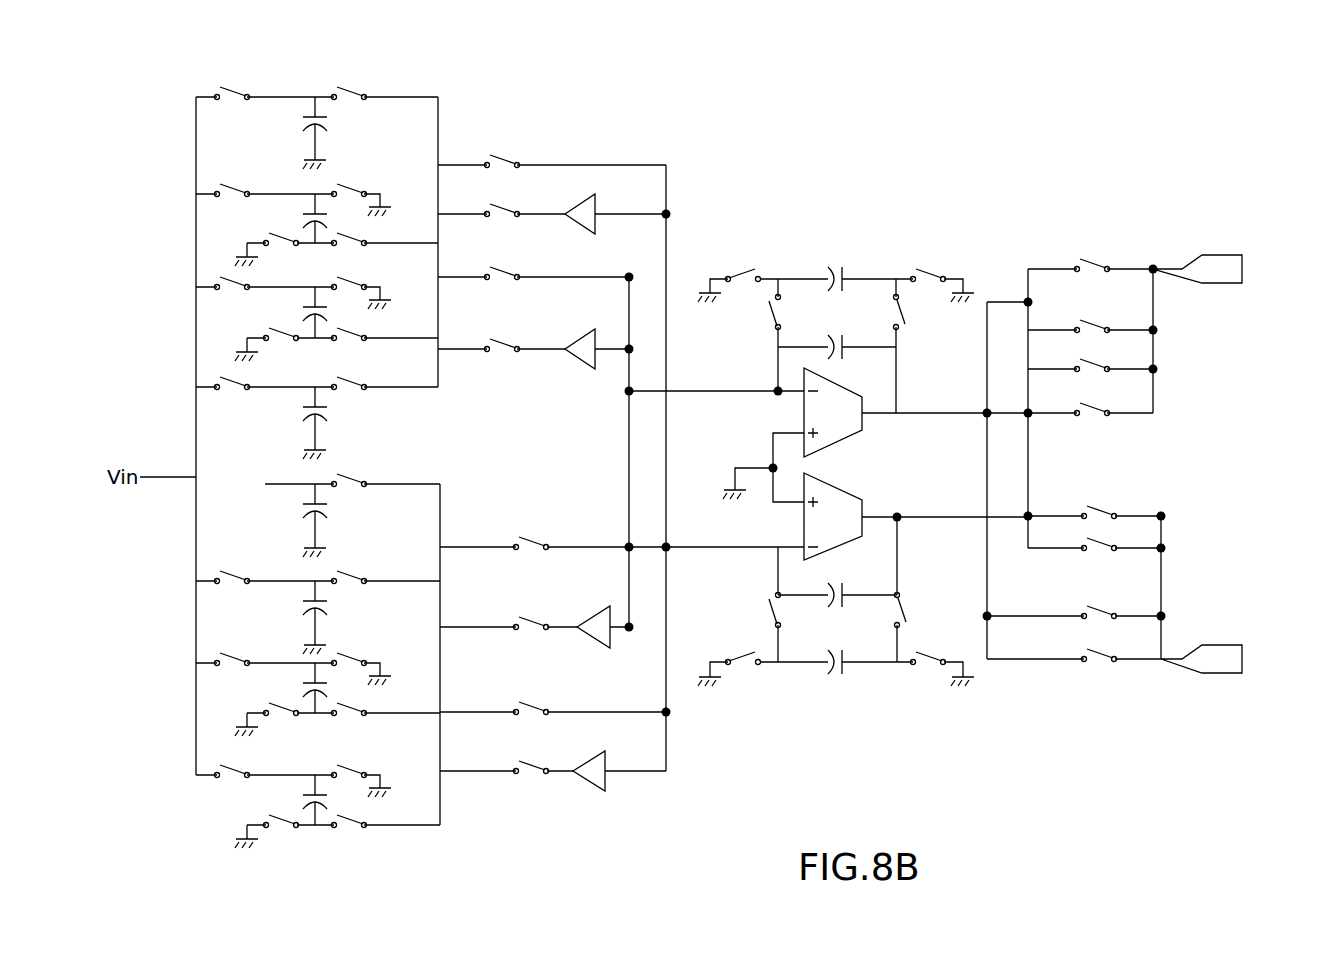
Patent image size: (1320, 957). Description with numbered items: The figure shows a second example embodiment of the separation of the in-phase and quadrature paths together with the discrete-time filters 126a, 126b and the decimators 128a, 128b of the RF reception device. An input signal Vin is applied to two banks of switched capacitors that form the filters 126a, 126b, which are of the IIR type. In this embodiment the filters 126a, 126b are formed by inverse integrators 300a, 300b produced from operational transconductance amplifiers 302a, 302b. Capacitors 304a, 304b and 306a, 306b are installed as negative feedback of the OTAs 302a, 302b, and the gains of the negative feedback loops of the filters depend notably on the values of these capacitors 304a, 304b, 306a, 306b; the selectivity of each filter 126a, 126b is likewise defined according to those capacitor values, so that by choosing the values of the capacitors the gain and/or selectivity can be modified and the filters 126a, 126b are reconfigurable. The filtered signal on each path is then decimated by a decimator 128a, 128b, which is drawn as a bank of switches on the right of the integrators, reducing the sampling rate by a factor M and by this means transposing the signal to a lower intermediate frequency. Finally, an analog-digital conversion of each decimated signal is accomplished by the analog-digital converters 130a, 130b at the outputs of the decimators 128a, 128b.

The discrete-time filter 126a is at (462, 108).
The discrete-time filter 126b is at (477, 802).
The decimator 128a is at (1094, 243).
The decimator 128b is at (1119, 693).
The analog-digital converter 130a is at (1225, 267).
The analog-digital converter 130b is at (1228, 656).
The inverse integrator 300a is at (842, 305).
The inverse integrator 300b is at (863, 629).
The operational transconductance amplifier 302a is at (845, 432).
The operational transconductance amplifier 302b is at (853, 505).
The capacitor 304a is at (847, 270).
The capacitor 304b is at (850, 667).
The capacitor 306a is at (868, 352).
The capacitor 306b is at (868, 595).